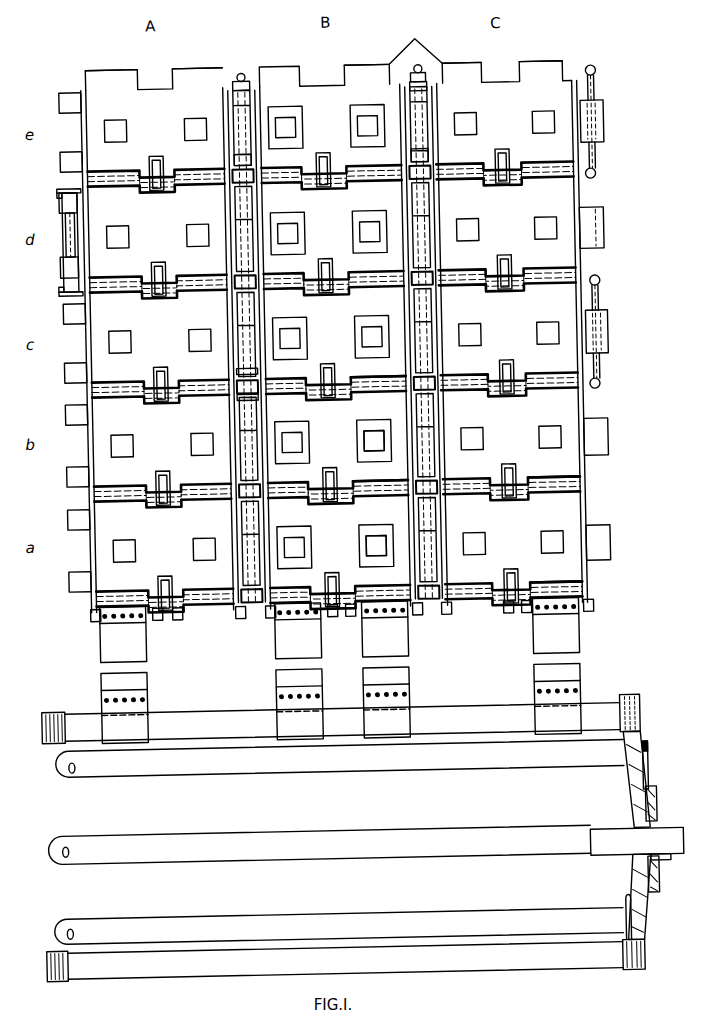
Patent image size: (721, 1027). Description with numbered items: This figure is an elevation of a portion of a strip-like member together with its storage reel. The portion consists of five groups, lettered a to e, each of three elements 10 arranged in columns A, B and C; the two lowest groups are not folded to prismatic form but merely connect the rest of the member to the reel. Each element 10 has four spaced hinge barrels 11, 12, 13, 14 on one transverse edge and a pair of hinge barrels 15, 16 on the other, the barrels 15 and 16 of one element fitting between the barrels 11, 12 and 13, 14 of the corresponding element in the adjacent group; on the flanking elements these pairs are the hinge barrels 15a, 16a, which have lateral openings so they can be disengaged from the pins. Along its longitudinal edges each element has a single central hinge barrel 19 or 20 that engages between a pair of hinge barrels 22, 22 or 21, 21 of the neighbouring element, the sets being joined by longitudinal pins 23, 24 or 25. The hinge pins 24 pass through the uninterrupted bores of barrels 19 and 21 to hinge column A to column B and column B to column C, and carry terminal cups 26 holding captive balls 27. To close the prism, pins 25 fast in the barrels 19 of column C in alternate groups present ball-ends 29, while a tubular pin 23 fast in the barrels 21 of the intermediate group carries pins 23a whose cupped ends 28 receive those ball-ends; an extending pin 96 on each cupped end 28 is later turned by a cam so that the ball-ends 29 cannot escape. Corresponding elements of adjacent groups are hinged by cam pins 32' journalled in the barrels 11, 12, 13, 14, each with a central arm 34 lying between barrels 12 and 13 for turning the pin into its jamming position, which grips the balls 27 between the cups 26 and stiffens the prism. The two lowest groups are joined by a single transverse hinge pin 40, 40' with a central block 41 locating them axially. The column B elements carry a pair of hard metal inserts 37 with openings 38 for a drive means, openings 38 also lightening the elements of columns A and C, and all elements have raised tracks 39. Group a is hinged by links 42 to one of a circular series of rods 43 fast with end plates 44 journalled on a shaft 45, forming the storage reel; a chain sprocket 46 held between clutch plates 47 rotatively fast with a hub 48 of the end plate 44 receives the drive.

The element 10 is at (438, 62).
The hinge barrel 11 is at (88, 609).
The hinge barrel 12 is at (152, 616).
The hinge barrel 13 is at (176, 616).
The hinge barrel 14 is at (233, 616).
The hinge barrel 15 is at (288, 65).
The hinge barrel 15a is at (117, 65).
The hinge barrel 16 is at (374, 65).
The hinge barrel 16a is at (203, 65).
The central hinge barrel 19 is at (611, 542).
The central hinge barrel 20 is at (606, 232).
The hinge barrel 21 is at (237, 84).
The hinge barrel 22 is at (78, 146).
The tubular pin 23 is at (78, 226).
The pin 23a is at (80, 199).
The hinge pin 24 is at (258, 252).
The pin 25 is at (600, 90).
The terminal cup 26 is at (236, 370).
The captive ball 27 is at (247, 70).
The cupped end 28 is at (64, 185).
The ball-end 29 is at (598, 72).
The cam pin 32' is at (379, 393).
The central arm 34 is at (329, 152).
The hard metal insert 37 is at (388, 456).
The opening 38 is at (188, 126).
The raised track 39 is at (92, 104).
The transverse hinge pin 40 is at (523, 519).
The transverse hinge pin 40' is at (381, 500).
The central block 41 is at (328, 476).
The link 42 is at (269, 672).
The rod 43 is at (60, 752).
The end plate 44 is at (620, 700).
The shaft 45 is at (52, 842).
The chain sprocket 46 is at (637, 752).
The clutch plate 47 is at (646, 795).
The hub 48 is at (622, 834).
The extending pin 96 is at (62, 189).